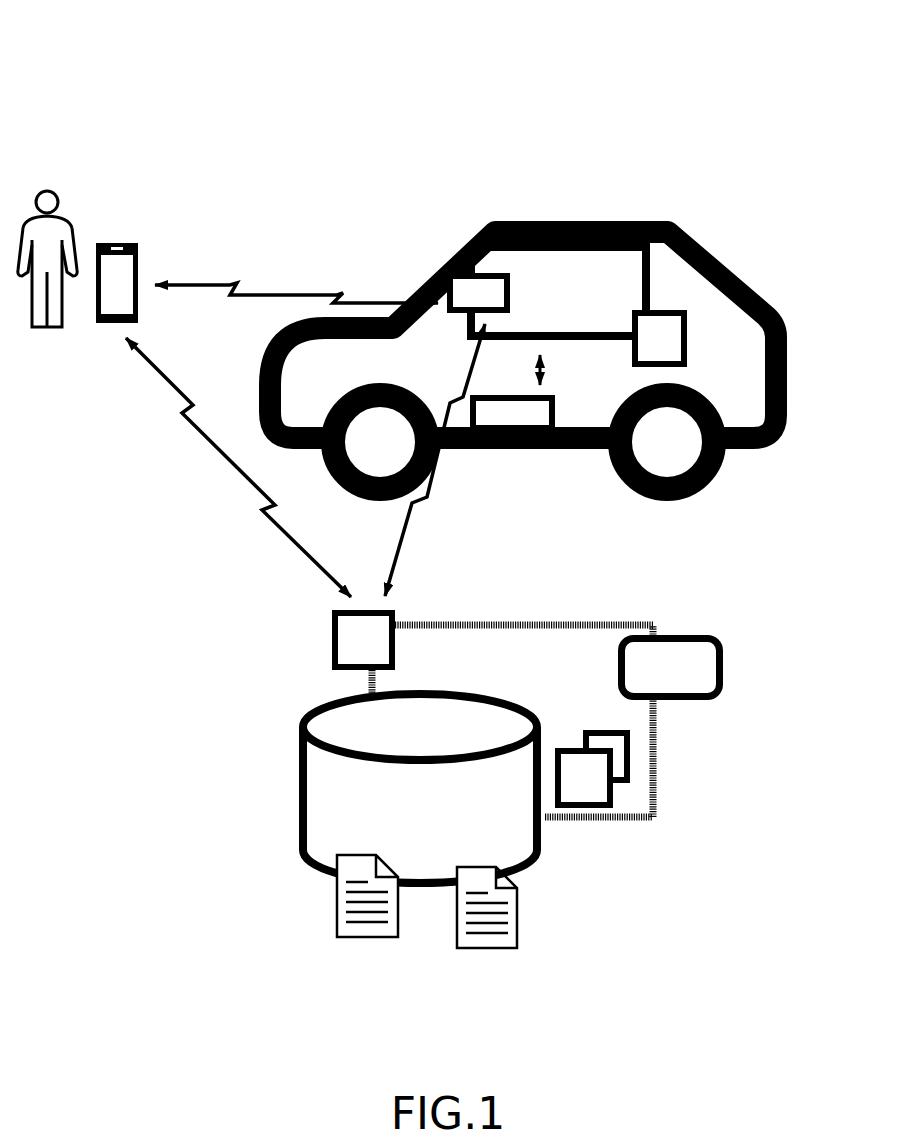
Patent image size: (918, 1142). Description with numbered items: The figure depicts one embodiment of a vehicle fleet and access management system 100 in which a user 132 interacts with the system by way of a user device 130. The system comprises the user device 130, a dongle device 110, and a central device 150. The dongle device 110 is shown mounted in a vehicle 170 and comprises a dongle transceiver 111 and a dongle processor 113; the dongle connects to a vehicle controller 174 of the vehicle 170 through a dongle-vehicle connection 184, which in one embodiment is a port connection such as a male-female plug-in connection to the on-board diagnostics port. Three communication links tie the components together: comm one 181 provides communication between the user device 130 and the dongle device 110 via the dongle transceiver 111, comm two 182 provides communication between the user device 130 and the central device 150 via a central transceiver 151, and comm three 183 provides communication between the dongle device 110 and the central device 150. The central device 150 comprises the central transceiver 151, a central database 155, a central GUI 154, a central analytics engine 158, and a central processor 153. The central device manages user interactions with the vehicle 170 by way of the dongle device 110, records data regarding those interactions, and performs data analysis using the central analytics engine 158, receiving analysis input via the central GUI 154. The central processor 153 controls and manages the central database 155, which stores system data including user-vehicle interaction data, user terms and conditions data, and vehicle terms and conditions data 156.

The system 100 is at (162, 31).
The dongle device 110 is at (563, 222).
The dongle transceiver 111 is at (487, 268).
The dongle processor 113 is at (663, 310).
The user device 130 is at (110, 333).
The user 132 is at (70, 217).
The central device 150 is at (663, 715).
The central transceiver 151 is at (330, 645).
The central processor 153 is at (617, 800).
The central GUI 154 is at (725, 663).
The central database 155 is at (296, 799).
The vehicle terms and conditions data 156 is at (470, 952).
The central analytics engine 158 is at (635, 753).
The vehicle 170 is at (632, 221).
The vehicle controller 174 is at (498, 410).
The comm one 181 is at (208, 277).
The comm two 182 is at (223, 470).
The comm three 183 is at (393, 583).
The dongle-vehicle connection 184 is at (547, 370).